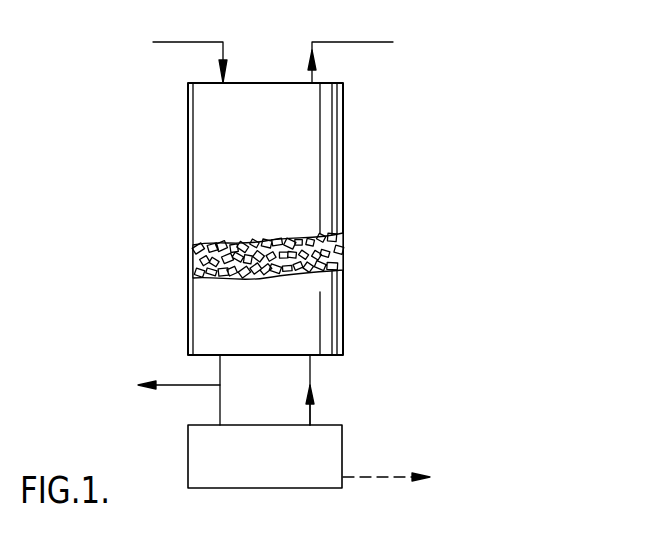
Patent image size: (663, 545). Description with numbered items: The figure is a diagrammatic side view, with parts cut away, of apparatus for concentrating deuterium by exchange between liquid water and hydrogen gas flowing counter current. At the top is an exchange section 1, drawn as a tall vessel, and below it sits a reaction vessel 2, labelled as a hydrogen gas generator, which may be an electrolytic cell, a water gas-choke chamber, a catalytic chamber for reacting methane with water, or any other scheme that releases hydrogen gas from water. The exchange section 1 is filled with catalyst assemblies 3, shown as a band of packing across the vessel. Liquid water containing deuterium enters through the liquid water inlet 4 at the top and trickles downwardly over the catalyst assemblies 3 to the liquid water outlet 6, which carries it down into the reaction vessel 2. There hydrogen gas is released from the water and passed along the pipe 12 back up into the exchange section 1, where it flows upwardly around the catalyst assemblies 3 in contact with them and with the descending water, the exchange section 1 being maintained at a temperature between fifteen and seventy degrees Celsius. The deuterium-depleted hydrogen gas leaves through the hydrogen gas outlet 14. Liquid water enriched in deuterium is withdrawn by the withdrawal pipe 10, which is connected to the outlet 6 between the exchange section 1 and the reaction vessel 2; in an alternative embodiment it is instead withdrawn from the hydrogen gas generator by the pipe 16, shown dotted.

The exchange section 1 is at (343, 194).
The reaction vessel 2 is at (288, 490).
The catalyst assemblies 3 is at (193, 249).
The liquid water inlet 4 is at (223, 48).
The liquid water outlet 6 is at (220, 405).
The withdrawal pipe 10 is at (165, 388).
The pipe 12 is at (313, 410).
The hydrogen gas outlet 14 is at (345, 42).
The pipe 16 is at (356, 479).